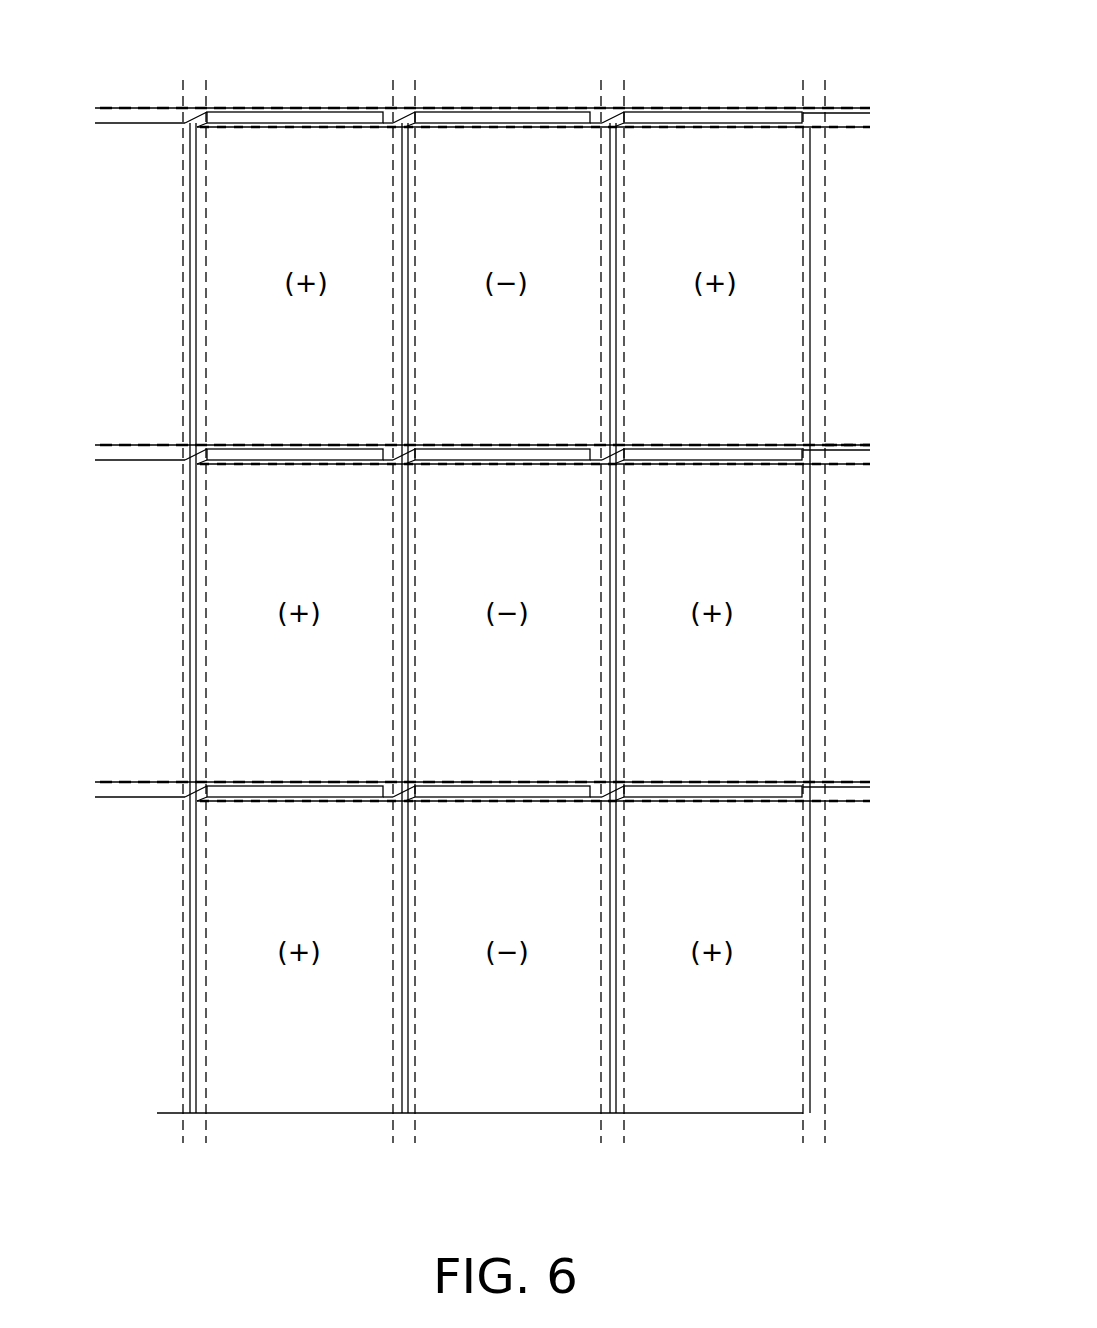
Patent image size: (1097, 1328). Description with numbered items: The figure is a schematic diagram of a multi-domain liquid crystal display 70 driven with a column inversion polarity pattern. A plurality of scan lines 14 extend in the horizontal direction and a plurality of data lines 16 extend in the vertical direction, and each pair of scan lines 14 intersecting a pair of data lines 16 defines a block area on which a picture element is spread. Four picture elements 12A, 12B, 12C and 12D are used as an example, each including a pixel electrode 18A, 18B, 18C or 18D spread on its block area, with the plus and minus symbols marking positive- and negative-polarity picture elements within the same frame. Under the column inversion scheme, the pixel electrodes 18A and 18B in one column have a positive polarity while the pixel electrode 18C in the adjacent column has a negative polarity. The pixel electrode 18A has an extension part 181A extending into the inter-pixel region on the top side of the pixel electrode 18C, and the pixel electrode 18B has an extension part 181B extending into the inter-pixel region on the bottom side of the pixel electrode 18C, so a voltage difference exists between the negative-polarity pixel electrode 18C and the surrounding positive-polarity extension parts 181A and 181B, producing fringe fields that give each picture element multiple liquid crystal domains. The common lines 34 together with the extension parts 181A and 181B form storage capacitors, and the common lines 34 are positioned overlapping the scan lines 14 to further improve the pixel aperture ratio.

The multi-domain liquid crystal display 70 is at (916, 33).
The data line 16 is at (183, 233).
The scan line 14 is at (140, 444).
The common line 34 is at (858, 446).
The picture element 12A is at (308, 460).
The picture element 12B is at (308, 797).
The picture element 12C is at (516, 462).
The picture element 12D is at (720, 464).
The pixel electrode 18A is at (290, 490).
The pixel electrode 18B is at (285, 825).
The pixel electrode 18C is at (583, 567).
The pixel electrode 18D is at (785, 570).
The extension part 181A is at (467, 458).
The extension part 181B is at (496, 788).